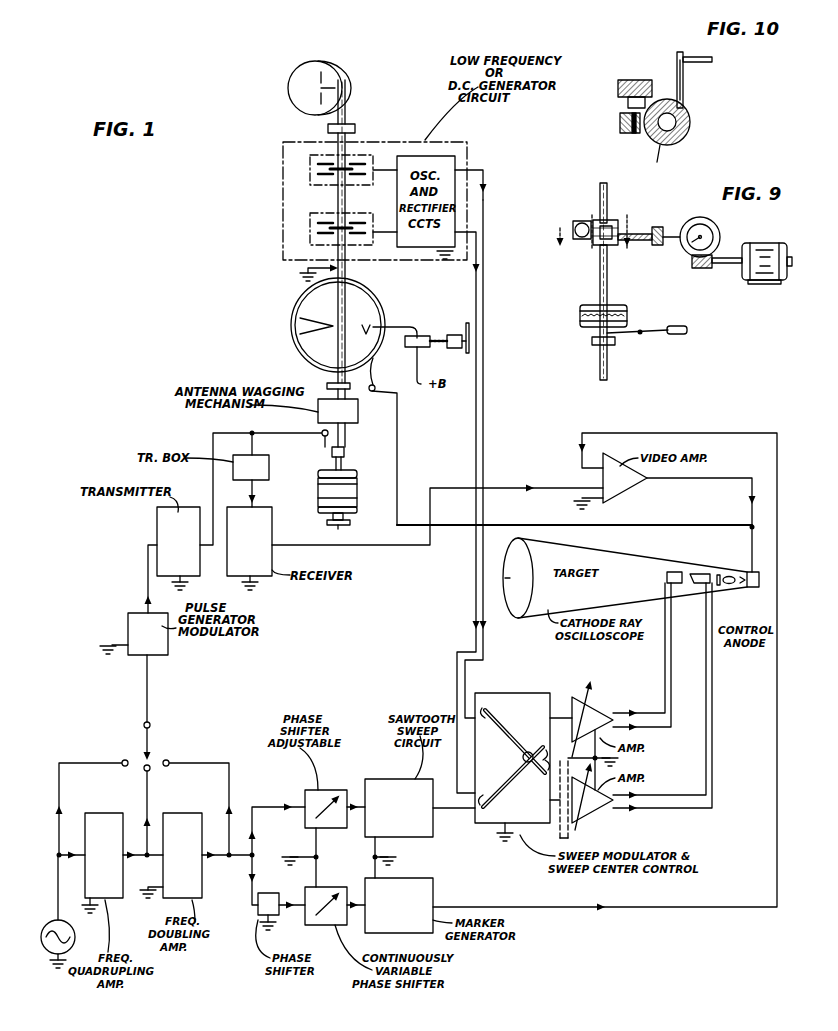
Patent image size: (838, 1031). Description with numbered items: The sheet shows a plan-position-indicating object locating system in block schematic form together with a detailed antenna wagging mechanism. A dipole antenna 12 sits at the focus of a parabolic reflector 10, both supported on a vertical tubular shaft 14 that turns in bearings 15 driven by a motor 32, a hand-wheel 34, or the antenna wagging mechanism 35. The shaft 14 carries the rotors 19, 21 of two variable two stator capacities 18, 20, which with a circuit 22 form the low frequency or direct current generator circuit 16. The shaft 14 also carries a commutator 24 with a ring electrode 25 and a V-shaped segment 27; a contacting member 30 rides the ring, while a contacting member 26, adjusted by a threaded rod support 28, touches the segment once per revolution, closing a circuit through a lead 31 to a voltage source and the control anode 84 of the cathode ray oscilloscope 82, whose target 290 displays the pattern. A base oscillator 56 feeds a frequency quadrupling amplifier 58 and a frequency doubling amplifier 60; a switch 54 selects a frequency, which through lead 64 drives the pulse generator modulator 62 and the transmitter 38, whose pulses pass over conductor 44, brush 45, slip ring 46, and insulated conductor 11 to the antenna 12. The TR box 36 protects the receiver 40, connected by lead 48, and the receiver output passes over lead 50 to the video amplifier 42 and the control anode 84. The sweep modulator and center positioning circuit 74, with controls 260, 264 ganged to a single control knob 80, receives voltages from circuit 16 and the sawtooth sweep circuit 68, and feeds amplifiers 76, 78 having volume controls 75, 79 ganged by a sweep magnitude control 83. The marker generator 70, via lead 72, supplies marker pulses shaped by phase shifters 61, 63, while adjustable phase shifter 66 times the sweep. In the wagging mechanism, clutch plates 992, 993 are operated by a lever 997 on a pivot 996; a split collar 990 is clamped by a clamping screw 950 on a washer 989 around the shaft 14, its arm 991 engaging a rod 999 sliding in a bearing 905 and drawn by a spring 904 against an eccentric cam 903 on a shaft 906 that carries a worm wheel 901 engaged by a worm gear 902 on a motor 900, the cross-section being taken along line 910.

In FIG. 1, the parabolic reflector 10 is at (336, 66).
In FIG. 1, the insulated conductor 11 is at (348, 116).
In FIG. 9, the insulated conductor 11 is at (608, 183).
In FIG. 10, the insulated conductor 11 is at (685, 112).
In FIG. 1, the dipole antenna 12 is at (316, 84).
In FIG. 1, the tubular shaft 14 is at (355, 128).
In FIG. 9, the tubular shaft 14 is at (608, 290).
In FIG. 10, the tubular shaft 14 is at (667, 158).
In FIG. 1, the bearings 15 is at (328, 129).
In FIG. 1, the low frequency or direct current generator circuit 16 is at (467, 148).
In FIG. 1, the variable two stator capacity 18 is at (365, 156).
In FIG. 1, the rotor 19 is at (322, 168).
In FIG. 1, the variable two stator capacity 20 is at (358, 214).
In FIG. 1, the rotor 21 is at (320, 228).
In FIG. 1, the circuit 22 is at (483, 170).
In FIG. 1, the commutator 24 is at (376, 300).
In FIG. 1, the ring electrode 25 is at (365, 282).
In FIG. 1, the contacting member 26 is at (410, 326).
In FIG. 1, the V-shaped segment 27 is at (300, 326).
In FIG. 1, the threaded rod support 28 is at (440, 336).
In FIG. 1, the contacting member 30 is at (376, 386).
In FIG. 1, the lead 31 is at (419, 386).
In FIG. 1, the motor 32 is at (352, 490).
In FIG. 1, the hand-wheel 34 is at (333, 525).
In FIG. 1, the antenna wagging mechanism 35 is at (352, 415).
In FIG. 1, the TR box 36 is at (266, 472).
In FIG. 1, the transmitter 38 is at (160, 520).
In FIG. 1, the receiver 40 is at (265, 556).
In FIG. 1, the video amplifier 42 is at (622, 492).
In FIG. 1, the conductor 44 is at (283, 430).
In FIG. 1, the brush 45 is at (322, 440).
In FIG. 1, the slip ring 46 is at (345, 452).
In FIG. 1, the lead 48 is at (258, 494).
In FIG. 1, the lead 50 is at (390, 540).
In FIG. 1, the switch 54 is at (150, 734).
In FIG. 1, the base oscillator 56 is at (44, 930).
In FIG. 1, the frequency quadrupling amplifier 58 is at (102, 813).
In FIG. 1, the frequency doubling amplifier 60 is at (185, 813).
In FIG. 1, the adjustable phase shifter 61 is at (268, 900).
In FIG. 1, the pulse generator modulator 62 is at (168, 648).
In FIG. 1, the continuously variable phase shifter 63 is at (336, 887).
In FIG. 1, the lead 64 is at (150, 684).
In FIG. 1, the adjustable phase shifter 66 is at (336, 790).
In FIG. 1, the sawtooth sweep circuit 68 is at (433, 832).
In FIG. 1, the marker generator 70 is at (433, 892).
In FIG. 1, the marker lead 72 is at (542, 906).
In FIG. 1, the sweep modulator and center positioning circuit 74 is at (528, 700).
In FIG. 1, the volume control 75 is at (576, 704).
In FIG. 1, the amplifier 76 is at (592, 705).
In FIG. 1, the amplifier 78 is at (598, 808).
In FIG. 1, the volume control 79 is at (582, 822).
In FIG. 1, the control knob 80 is at (528, 763).
In FIG. 1, the cathode ray oscilloscope 82 is at (625, 560).
In FIG. 1, the sweep magnitude control 83 is at (560, 834).
In FIG. 1, the control anode 84 is at (736, 590).
In FIG. 1, the control 260 is at (512, 738).
In FIG. 1, the control 264 is at (494, 795).
In FIG. 1, the target 290 is at (532, 560).
In FIG. 9, the motor 900 is at (762, 284).
In FIG. 9, the worm wheel 901 is at (716, 226).
In FIG. 9, the worm gear 902 is at (722, 264).
In FIG. 9, the eccentric cam 903 is at (710, 235).
In FIG. 9, the spring 904 is at (640, 241).
In FIG. 9, the bearing 905 is at (662, 227).
In FIG. 9, the shaft 906 is at (696, 262).
In FIG. 9, the cross-section line 910 is at (600, 232).
In FIG. 9, the clamping screw 950 is at (575, 238).
In FIG. 10, the clamping screw 950 is at (630, 80).
In FIG. 9, the washer 989 is at (596, 222).
In FIG. 10, the washer 989 is at (690, 122).
In FIG. 9, the collar 990 is at (598, 246).
In FIG. 10, the collar 990 is at (690, 133).
In FIG. 9, the arm 991 is at (612, 228).
In FIG. 10, the arm 991 is at (682, 80).
In FIG. 9, the clutch plate 992 is at (580, 323).
In FIG. 9, the clutch plate 993 is at (588, 306).
In FIG. 9, the pivot 996 is at (640, 336).
In FIG. 9, the lever 997 is at (675, 334).
In FIG. 9, the rod 999 is at (675, 236).
In FIG. 10, the rod 999 is at (700, 62).